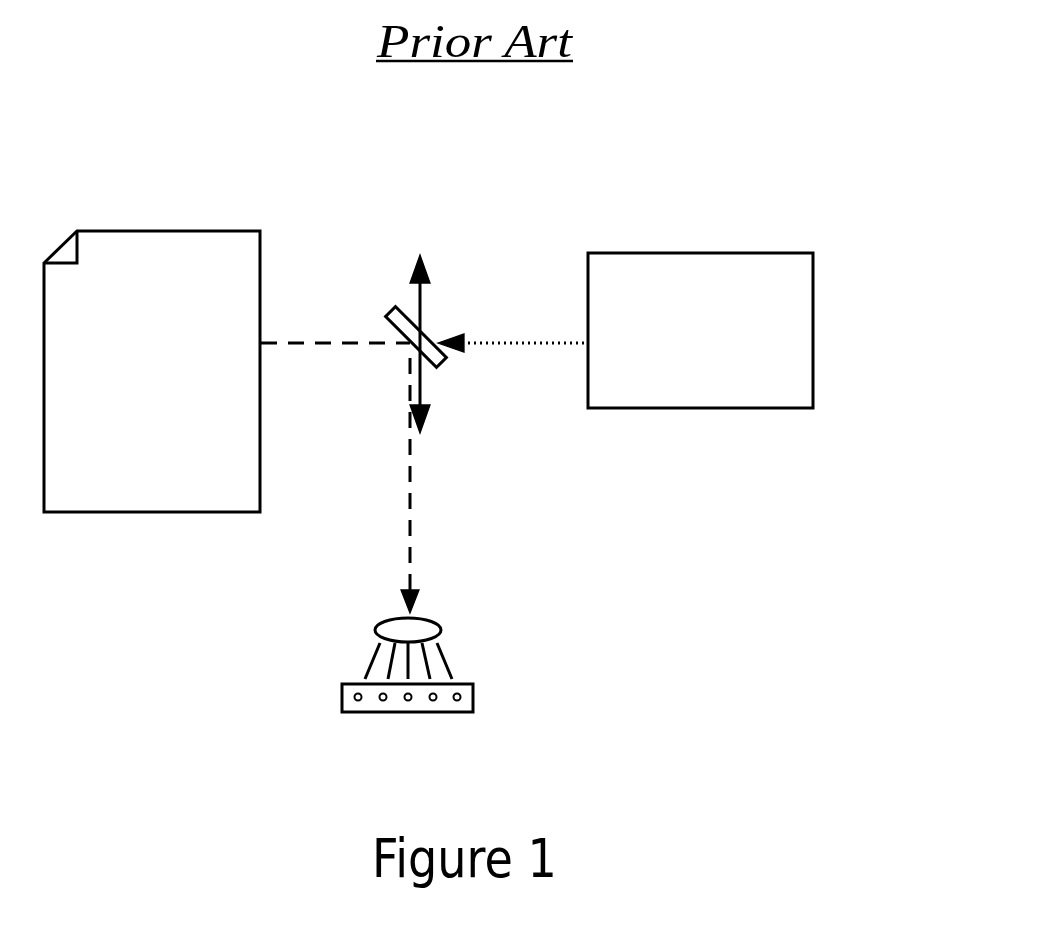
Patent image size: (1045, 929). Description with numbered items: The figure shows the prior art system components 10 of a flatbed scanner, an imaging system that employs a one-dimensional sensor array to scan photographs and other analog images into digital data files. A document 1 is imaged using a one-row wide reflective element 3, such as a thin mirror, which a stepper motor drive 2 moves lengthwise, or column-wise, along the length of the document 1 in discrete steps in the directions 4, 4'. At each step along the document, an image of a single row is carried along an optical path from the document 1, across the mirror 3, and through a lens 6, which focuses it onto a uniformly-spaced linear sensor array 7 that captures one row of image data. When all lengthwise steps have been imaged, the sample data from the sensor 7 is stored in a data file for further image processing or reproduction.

The document 1 is at (178, 230).
The stepper motor drive 2 is at (698, 253).
The reflective element 3 is at (386, 316).
The lengthwise movement direction 4 is at (420, 280).
The opposite lengthwise movement direction 4' is at (430, 393).
The lens 6 is at (375, 626).
The linear sensor array 7 is at (342, 702).
The system components 10 is at (865, 206).